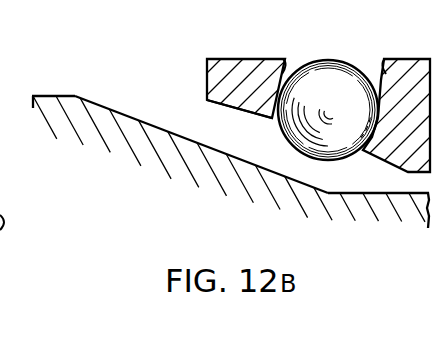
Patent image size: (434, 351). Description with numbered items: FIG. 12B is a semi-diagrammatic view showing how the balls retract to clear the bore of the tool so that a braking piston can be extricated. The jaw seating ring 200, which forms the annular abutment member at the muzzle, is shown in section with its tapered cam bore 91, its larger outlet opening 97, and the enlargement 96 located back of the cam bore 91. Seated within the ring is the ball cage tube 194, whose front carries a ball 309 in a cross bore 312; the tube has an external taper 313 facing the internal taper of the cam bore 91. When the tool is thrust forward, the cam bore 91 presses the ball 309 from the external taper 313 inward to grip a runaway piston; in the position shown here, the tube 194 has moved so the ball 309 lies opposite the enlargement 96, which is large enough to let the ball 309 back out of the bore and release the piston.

The ball cage tube 194 is at (238, 63).
The cross bore 312 is at (285, 64).
The ball 309 is at (332, 83).
The external taper 313 is at (213, 110).
The outlet opening 97 is at (55, 96).
The cam bore 91 is at (102, 107).
The jaw seating ring 200 is at (153, 158).
The enlargement 96 is at (401, 194).